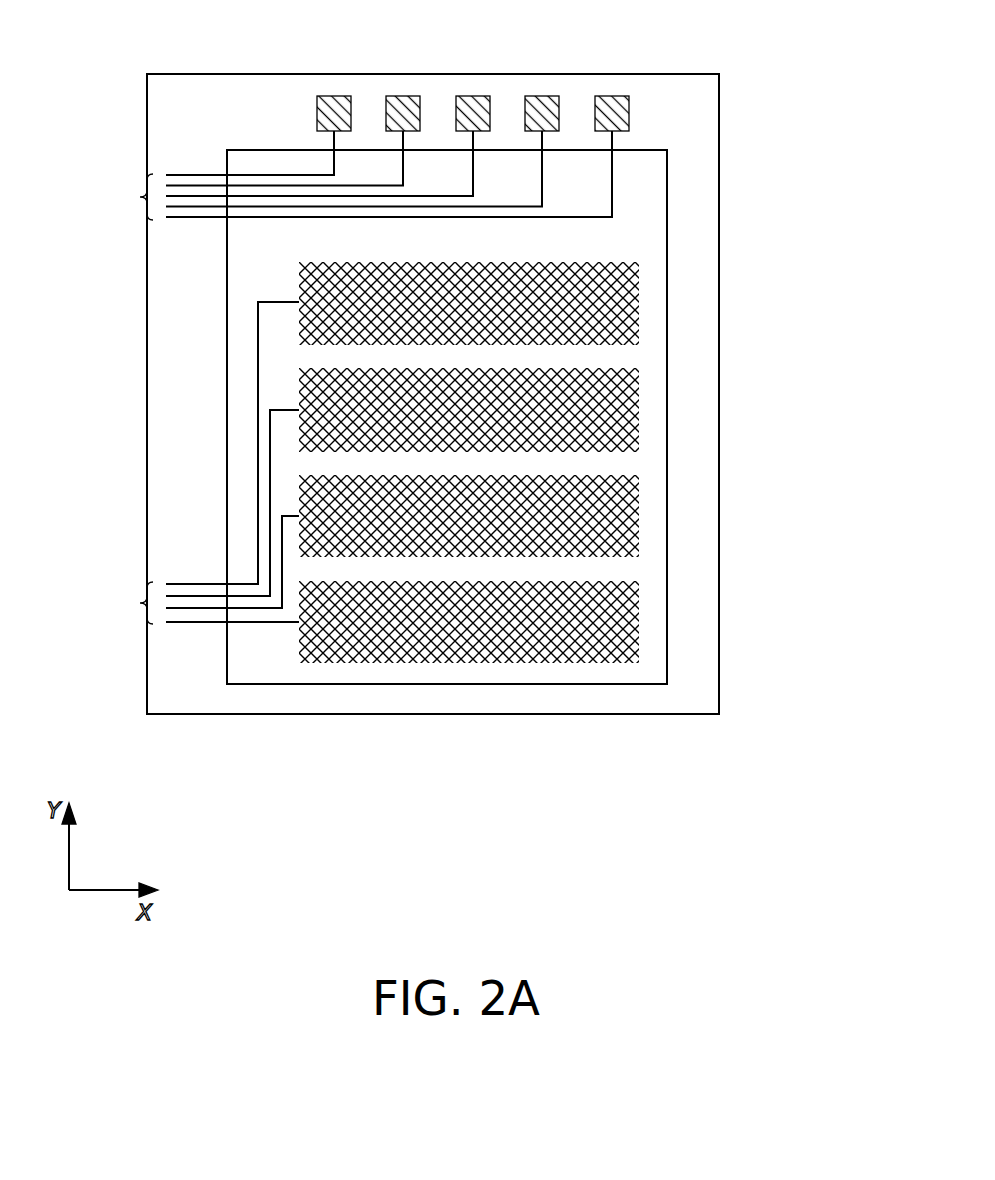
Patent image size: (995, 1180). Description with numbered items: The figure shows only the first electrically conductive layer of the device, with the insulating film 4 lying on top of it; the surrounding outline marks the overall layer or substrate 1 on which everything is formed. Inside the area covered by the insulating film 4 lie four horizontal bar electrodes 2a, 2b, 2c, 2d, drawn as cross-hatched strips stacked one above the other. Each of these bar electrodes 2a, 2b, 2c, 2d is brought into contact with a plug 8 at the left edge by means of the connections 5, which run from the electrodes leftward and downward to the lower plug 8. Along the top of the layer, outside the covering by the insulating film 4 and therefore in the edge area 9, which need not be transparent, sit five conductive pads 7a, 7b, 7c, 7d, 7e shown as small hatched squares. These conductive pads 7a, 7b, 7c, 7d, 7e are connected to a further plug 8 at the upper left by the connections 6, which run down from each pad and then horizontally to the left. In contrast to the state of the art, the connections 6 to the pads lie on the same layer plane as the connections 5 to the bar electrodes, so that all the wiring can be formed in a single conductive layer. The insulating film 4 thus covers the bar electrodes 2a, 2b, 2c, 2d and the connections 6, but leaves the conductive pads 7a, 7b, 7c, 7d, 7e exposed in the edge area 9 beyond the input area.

The substrate 1 is at (680, 714).
The bar electrode 2a is at (639, 303).
The bar electrode 2b is at (639, 408).
The bar electrode 2c is at (639, 515).
The bar electrode 2d is at (639, 622).
The insulating film 4 is at (658, 203).
The connection 5 is at (258, 411).
The connection 6 is at (198, 173).
The conductive pad 7a is at (334, 96).
The conductive pad 7b is at (403, 96).
The conductive pad 7c is at (473, 96).
The conductive pad 7d is at (542, 96).
The conductive pad 7e is at (612, 96).
The plug 8 is at (140, 197).
The edge area 9 is at (439, 111).